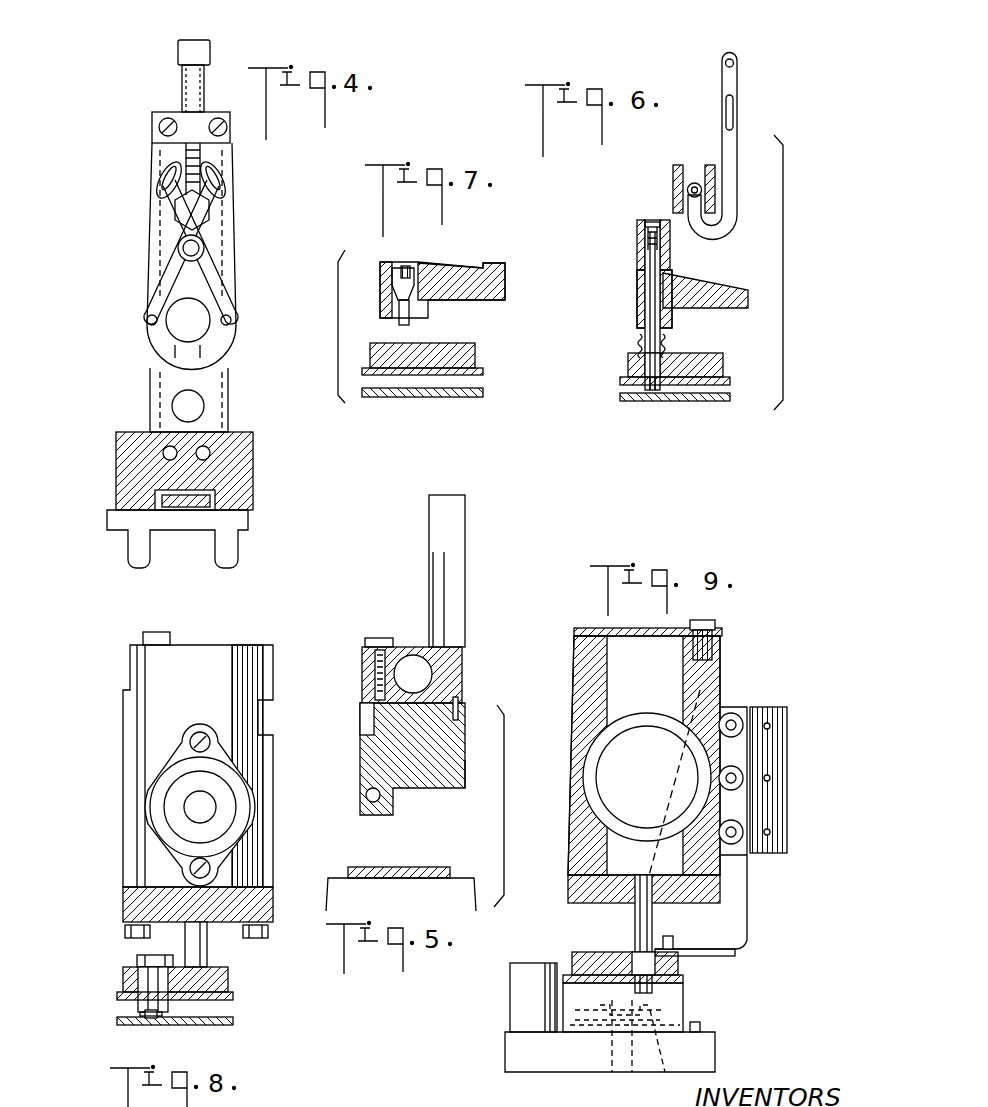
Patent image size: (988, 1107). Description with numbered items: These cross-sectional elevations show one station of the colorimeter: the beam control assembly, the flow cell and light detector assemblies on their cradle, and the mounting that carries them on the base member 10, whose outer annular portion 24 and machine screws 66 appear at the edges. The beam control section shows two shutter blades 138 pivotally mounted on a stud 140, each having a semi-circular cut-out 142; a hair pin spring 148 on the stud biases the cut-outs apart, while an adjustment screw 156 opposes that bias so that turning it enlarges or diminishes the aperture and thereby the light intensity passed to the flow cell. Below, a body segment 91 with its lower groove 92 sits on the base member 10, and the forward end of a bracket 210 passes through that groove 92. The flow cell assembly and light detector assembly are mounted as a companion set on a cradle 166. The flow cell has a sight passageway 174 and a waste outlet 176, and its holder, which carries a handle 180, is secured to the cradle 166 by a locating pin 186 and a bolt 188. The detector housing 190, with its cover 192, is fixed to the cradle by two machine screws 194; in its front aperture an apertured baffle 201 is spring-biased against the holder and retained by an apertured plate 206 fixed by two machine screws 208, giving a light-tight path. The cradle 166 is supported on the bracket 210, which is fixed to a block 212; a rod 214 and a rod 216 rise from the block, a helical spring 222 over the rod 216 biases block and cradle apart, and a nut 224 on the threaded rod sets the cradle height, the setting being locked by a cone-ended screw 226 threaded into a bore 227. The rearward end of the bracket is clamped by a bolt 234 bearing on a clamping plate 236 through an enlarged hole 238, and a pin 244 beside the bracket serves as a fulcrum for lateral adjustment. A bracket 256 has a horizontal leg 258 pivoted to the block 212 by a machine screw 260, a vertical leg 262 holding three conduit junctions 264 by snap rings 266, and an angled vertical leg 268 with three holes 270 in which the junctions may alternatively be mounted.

In FIG. 4, the base member 10 is at (240, 528).
In FIG. 9, the outer annular vertically elongated portion 24 is at (715, 1050).
In FIG. 9, the machine screws 66 is at (510, 1003).
In FIG. 4, the body segment 91 is at (253, 435).
In FIG. 4, the lower groove 92 is at (218, 502).
In FIG. 4, the shutter blades 138 is at (215, 355).
In FIG. 4, the stud 140 is at (178, 248).
In FIG. 4, the semi-circular cut-out 142 is at (172, 345).
In FIG. 4, the hair pin spring 148 is at (162, 282).
In FIG. 4, the adjustment screw 156 is at (210, 50).
In FIG. 5, the cradle 166 is at (465, 760).
In FIG. 6, the sight passageway 174 is at (688, 190).
In FIG. 6, the waste outlet 176 is at (727, 180).
In FIG. 5, the handle 180 is at (430, 511).
In FIG. 5, the locating pin 186 is at (458, 705).
In FIG. 5, the bolt 188 is at (372, 636).
In FIG. 8, the housing 190 is at (136, 678).
In FIG. 5, the housing 190 is at (366, 722).
In FIG. 9, the housing 190 is at (720, 672).
In FIG. 9, the cover 192 is at (645, 628).
In FIG. 8, the machine screws 194 is at (143, 636).
In FIG. 9, the machine screws 194 is at (715, 622).
In FIG. 8, the apertured baffle 201 is at (185, 808).
In FIG. 8, the apertured plate 206 is at (160, 784).
In FIG. 8, the machine screws 208 is at (192, 742).
In FIG. 4, the bracket 210 is at (190, 506).
In FIG. 7, the bracket 210 is at (483, 392).
In FIG. 6, the bracket 210 is at (625, 397).
In FIG. 8, the bracket 210 is at (233, 1020).
In FIG. 5, the bracket 210 is at (352, 868).
In FIG. 9, the bracket 210 is at (680, 1010).
In FIG. 9, the block 212 is at (570, 952).
In FIG. 8, the rod 214 is at (210, 962).
In FIG. 9, the rod 214 is at (635, 925).
In FIG. 6, the rod 216 is at (655, 292).
In FIG. 6, the helical spring 222 is at (638, 338).
In FIG. 6, the nut 224 is at (640, 222).
In FIG. 7, the screw 226 is at (408, 267).
In FIG. 9, the screw 226 is at (683, 978).
In FIG. 7, the bore 227 is at (426, 300).
In FIG. 8, the bolt 234 is at (143, 958).
In FIG. 9, the bolt 234 is at (640, 1005).
In FIG. 9, the clamping plate 236 is at (623, 1007).
In FIG. 8, the enlarged hole 238 is at (148, 1022).
In FIG. 9, the enlarged hole 238 is at (665, 1072).
In FIG. 9, the pin 244 is at (700, 1025).
In FIG. 9, the bracket 256 is at (735, 890).
In FIG. 9, the horizontal leg 258 is at (745, 942).
In FIG. 9, the machine screw 260 is at (672, 938).
In FIG. 9, the vertical leg 262 is at (747, 910).
In FIG. 9, the conduit junctions 264 is at (735, 720).
In FIG. 9, the snap rings 266 is at (743, 790).
In FIG. 9, the vertical leg 268 is at (787, 735).
In FIG. 9, the holes 270 is at (767, 778).